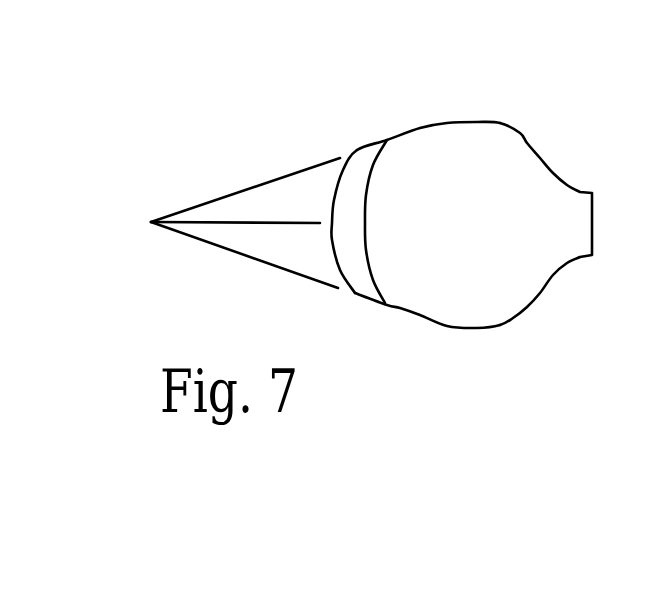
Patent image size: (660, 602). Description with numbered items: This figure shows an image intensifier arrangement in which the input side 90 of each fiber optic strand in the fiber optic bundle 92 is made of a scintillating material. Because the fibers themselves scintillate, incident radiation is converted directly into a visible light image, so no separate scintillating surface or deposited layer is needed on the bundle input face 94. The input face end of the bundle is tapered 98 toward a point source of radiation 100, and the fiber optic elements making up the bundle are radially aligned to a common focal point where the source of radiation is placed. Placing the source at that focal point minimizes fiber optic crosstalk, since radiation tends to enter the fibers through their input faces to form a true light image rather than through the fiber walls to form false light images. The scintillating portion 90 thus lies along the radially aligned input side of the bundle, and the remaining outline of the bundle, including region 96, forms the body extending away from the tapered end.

The input side 90 is at (357, 183).
The fiber optic bundle 92 is at (448, 110).
The bundle input face 94 is at (332, 247).
The shoulder 96 is at (512, 113).
The tapered input face end 98 is at (398, 125).
The point source of radiation 100 is at (151, 210).